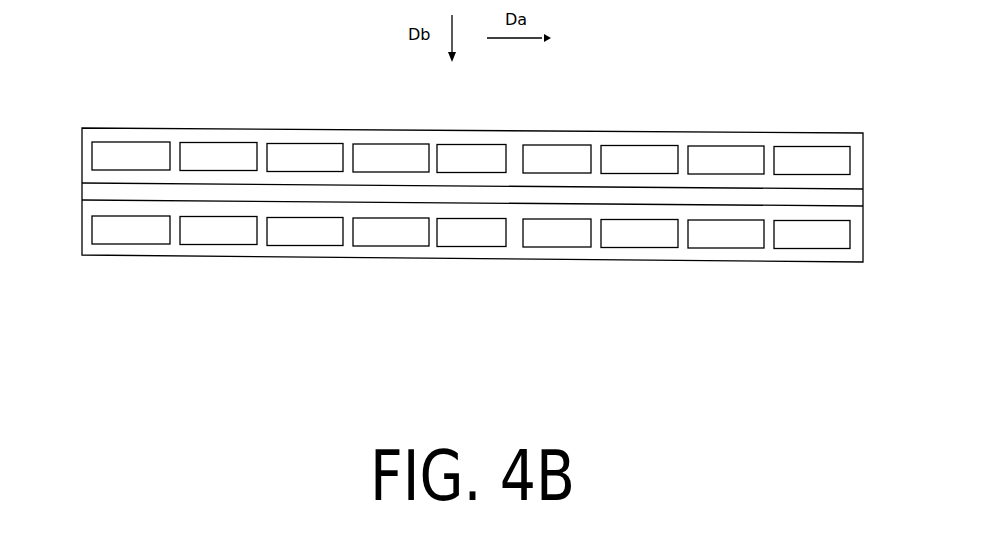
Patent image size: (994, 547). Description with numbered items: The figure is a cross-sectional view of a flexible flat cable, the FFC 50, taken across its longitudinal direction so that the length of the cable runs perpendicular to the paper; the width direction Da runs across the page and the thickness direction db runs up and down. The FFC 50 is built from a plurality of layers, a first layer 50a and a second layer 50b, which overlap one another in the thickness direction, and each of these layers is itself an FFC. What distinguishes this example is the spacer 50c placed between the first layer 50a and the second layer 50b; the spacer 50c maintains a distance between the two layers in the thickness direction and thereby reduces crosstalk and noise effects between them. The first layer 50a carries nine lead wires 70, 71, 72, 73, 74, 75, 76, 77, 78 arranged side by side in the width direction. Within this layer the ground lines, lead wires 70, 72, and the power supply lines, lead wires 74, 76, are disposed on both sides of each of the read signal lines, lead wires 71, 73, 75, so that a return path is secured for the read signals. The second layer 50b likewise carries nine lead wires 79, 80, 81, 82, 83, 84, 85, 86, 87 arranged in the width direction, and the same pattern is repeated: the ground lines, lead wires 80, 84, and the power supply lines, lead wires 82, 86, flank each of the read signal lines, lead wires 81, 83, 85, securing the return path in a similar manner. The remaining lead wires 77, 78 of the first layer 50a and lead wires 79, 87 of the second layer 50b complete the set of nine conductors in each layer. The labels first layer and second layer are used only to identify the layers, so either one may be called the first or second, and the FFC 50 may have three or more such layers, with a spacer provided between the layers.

The FFC 50 is at (353, 317).
The first layer 50a is at (81, 147).
The second layer 50b is at (81, 222).
The spacer 50c is at (857, 198).
The lead wire 70 is at (120, 143).
The lead wire 71 is at (203, 143).
The lead wire 72 is at (292, 144).
The lead wire 73 is at (375, 145).
The lead wire 74 is at (465, 145).
The lead wire 75 is at (548, 146).
The lead wire 76 is at (632, 146).
The lead wire 77 is at (724, 147).
The lead wire 78 is at (800, 147).
The lead wire 79 is at (128, 244).
The lead wire 80 is at (213, 244).
The lead wire 81 is at (300, 245).
The lead wire 82 is at (383, 246).
The lead wire 83 is at (470, 246).
The lead wire 84 is at (557, 246).
The lead wire 85 is at (640, 247).
The lead wire 86 is at (730, 248).
The lead wire 87 is at (813, 248).